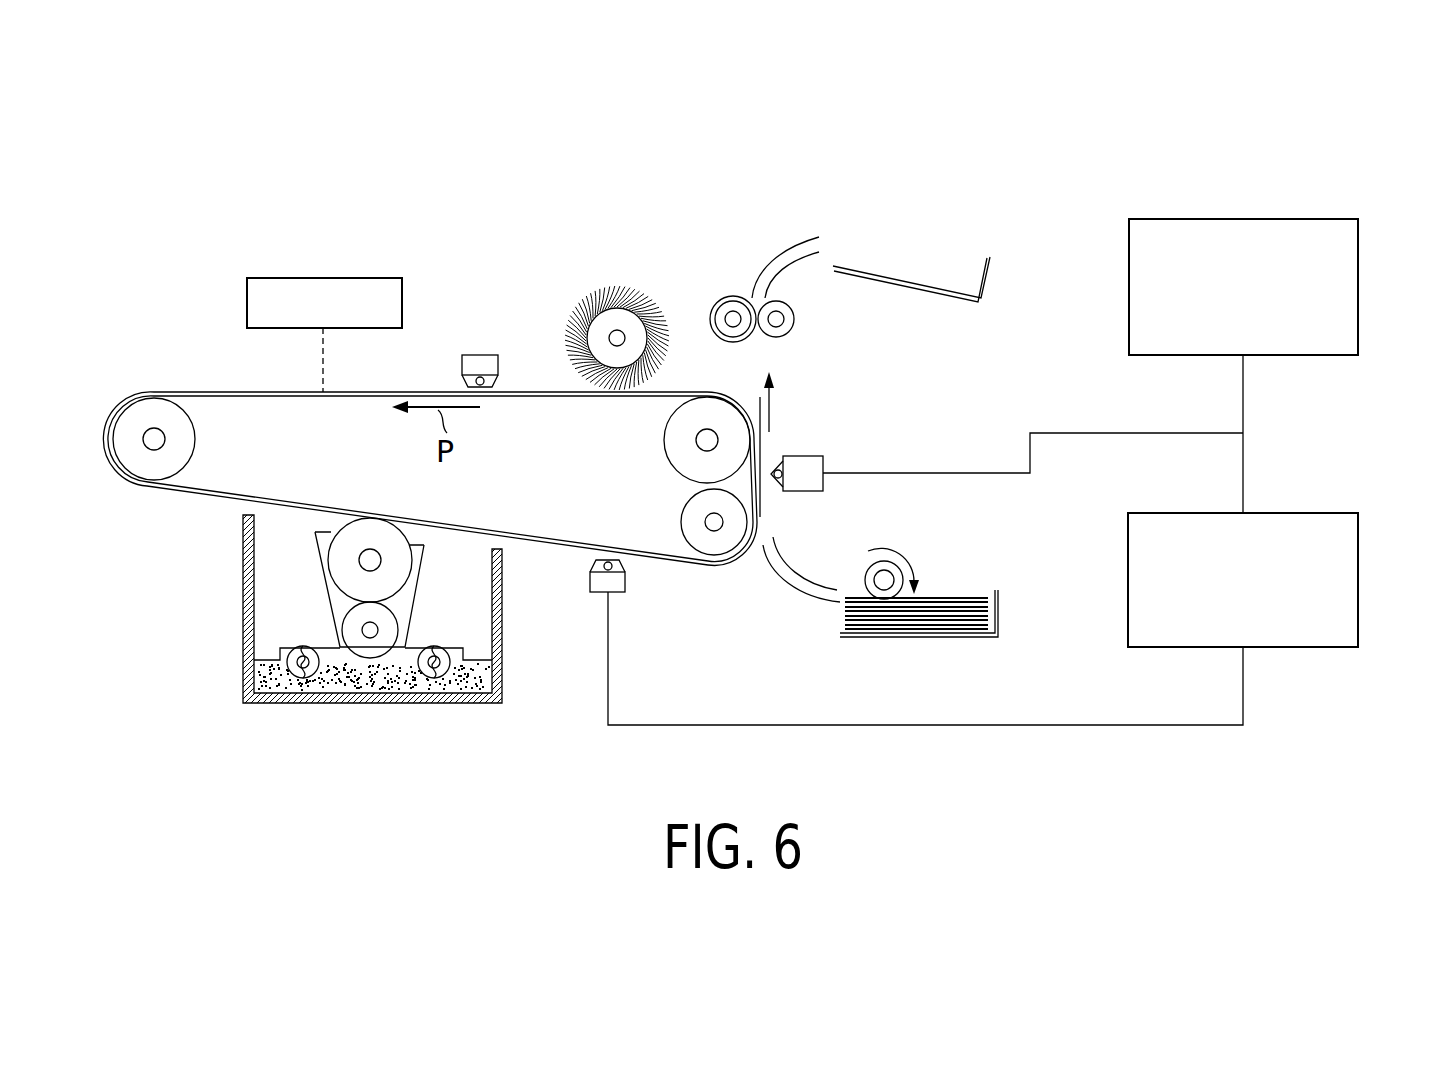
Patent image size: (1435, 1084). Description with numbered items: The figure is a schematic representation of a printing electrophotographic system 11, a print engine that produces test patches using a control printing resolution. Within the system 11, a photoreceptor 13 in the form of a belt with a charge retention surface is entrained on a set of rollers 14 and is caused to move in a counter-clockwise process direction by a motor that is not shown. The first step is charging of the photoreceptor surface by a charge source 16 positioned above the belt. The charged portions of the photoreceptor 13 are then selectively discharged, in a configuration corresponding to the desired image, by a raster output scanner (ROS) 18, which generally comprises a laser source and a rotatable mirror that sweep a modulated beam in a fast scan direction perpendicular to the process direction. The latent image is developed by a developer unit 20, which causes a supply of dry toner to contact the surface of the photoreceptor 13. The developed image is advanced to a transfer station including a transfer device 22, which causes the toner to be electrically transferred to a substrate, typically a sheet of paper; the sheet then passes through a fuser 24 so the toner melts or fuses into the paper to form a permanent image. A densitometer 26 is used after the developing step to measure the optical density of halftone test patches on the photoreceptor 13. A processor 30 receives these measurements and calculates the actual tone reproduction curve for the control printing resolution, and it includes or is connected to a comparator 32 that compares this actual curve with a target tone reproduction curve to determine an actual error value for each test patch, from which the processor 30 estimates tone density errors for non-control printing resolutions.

The printing electrophotographic system 11 is at (491, 206).
The photoreceptor 13 is at (210, 391).
The rollers 14 is at (196, 437).
The charge source 16 is at (492, 344).
The raster output scanner (ROS) 18 is at (402, 293).
The developer unit 20 is at (522, 737).
The transfer device 22 is at (864, 449).
The fuser 24 is at (711, 287).
The densitometer 26 is at (627, 595).
The processor 30 is at (1358, 580).
The comparator 32 is at (1240, 219).